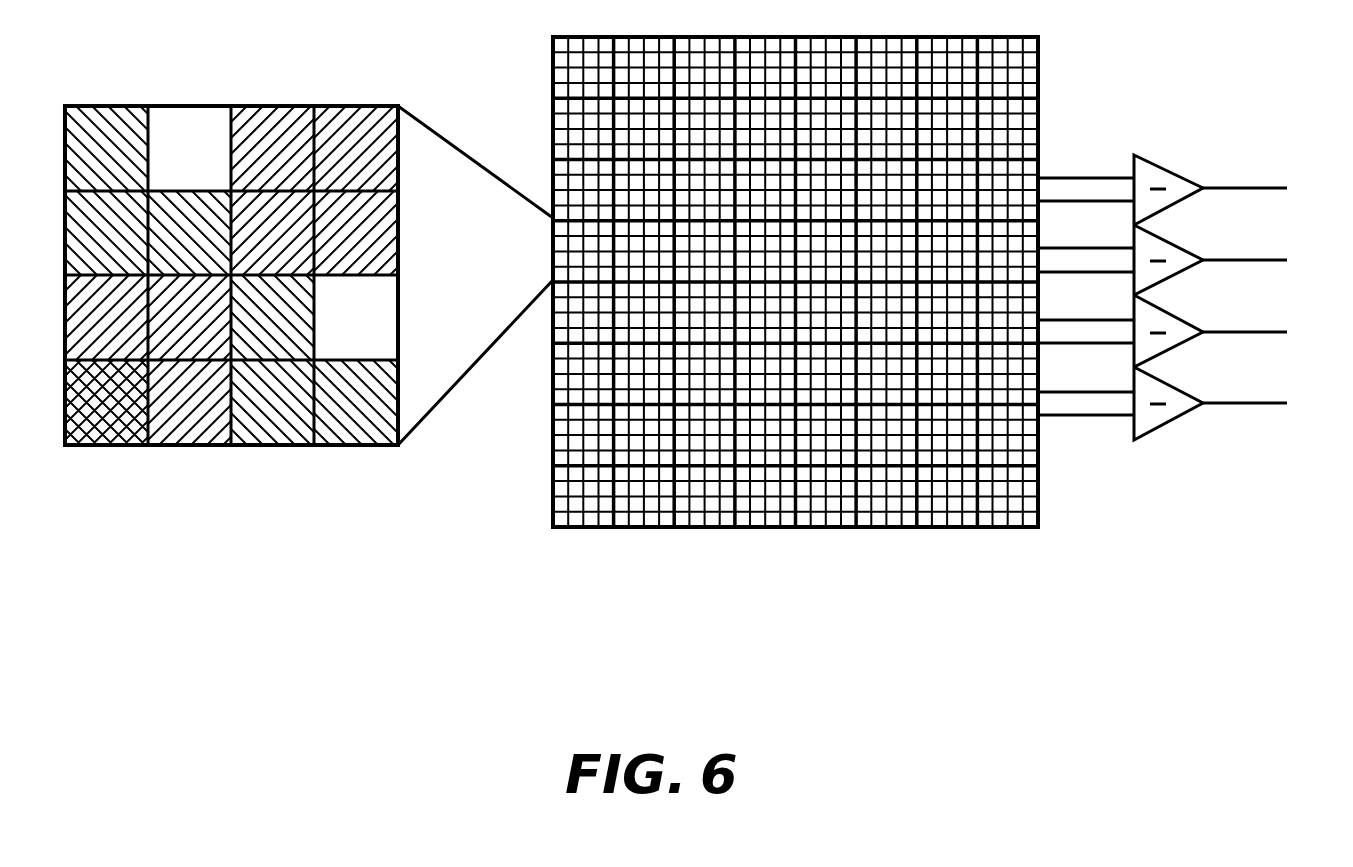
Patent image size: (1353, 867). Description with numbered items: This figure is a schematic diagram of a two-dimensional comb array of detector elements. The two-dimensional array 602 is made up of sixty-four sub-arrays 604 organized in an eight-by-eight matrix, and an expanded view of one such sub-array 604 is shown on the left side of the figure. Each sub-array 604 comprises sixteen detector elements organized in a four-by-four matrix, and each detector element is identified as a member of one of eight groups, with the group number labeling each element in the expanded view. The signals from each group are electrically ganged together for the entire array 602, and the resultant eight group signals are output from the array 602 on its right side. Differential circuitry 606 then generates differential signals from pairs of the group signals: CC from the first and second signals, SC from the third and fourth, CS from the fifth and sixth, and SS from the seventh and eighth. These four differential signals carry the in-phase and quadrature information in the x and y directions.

The two-dimensional array 602 is at (773, 528).
The sub-array 604 is at (202, 447).
The differential circuitry 606 is at (1150, 172).